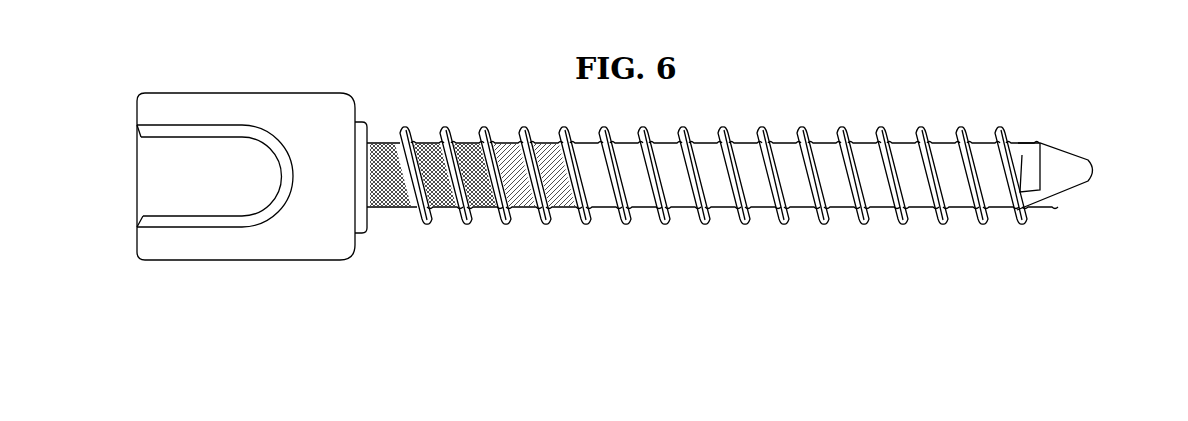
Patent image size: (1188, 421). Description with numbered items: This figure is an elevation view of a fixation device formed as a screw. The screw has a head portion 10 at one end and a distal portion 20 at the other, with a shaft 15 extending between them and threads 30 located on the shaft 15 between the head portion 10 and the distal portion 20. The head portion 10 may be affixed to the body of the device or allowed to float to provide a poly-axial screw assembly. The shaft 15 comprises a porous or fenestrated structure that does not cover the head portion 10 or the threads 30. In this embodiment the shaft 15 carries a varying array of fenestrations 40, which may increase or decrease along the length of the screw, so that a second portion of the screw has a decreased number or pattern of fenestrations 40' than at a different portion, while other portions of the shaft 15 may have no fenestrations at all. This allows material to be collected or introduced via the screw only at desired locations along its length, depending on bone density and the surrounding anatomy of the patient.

The head portion 10 is at (242, 278).
The shaft 15 is at (906, 122).
The distal portion 20 is at (1085, 208).
The threads 30 is at (744, 223).
The fenestrations 40 is at (496, 149).
The fenestrations 40' is at (690, 154).